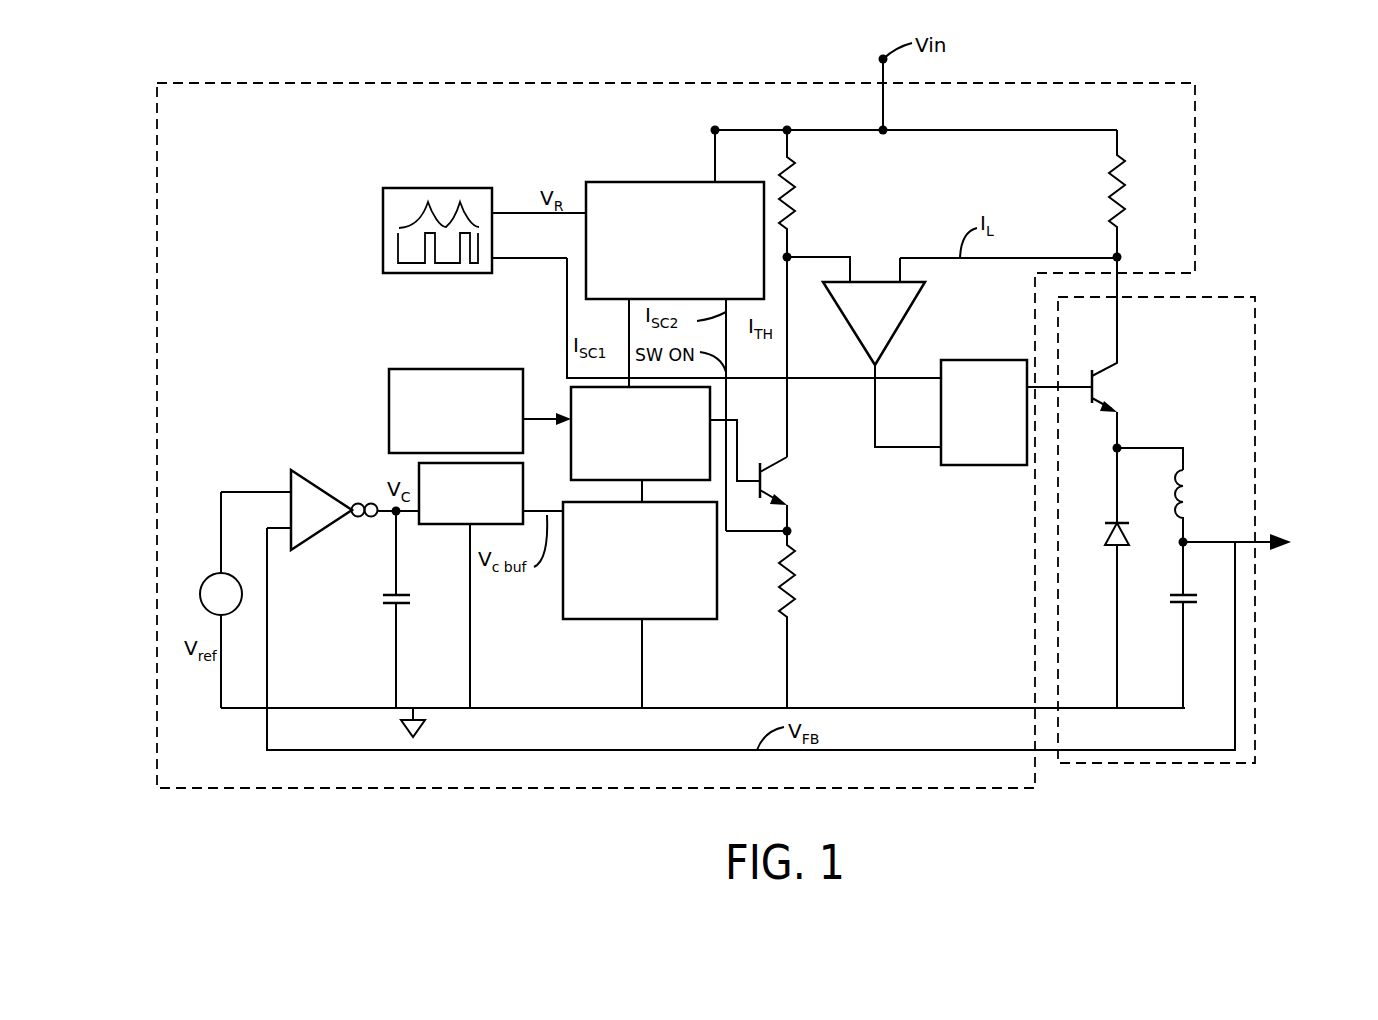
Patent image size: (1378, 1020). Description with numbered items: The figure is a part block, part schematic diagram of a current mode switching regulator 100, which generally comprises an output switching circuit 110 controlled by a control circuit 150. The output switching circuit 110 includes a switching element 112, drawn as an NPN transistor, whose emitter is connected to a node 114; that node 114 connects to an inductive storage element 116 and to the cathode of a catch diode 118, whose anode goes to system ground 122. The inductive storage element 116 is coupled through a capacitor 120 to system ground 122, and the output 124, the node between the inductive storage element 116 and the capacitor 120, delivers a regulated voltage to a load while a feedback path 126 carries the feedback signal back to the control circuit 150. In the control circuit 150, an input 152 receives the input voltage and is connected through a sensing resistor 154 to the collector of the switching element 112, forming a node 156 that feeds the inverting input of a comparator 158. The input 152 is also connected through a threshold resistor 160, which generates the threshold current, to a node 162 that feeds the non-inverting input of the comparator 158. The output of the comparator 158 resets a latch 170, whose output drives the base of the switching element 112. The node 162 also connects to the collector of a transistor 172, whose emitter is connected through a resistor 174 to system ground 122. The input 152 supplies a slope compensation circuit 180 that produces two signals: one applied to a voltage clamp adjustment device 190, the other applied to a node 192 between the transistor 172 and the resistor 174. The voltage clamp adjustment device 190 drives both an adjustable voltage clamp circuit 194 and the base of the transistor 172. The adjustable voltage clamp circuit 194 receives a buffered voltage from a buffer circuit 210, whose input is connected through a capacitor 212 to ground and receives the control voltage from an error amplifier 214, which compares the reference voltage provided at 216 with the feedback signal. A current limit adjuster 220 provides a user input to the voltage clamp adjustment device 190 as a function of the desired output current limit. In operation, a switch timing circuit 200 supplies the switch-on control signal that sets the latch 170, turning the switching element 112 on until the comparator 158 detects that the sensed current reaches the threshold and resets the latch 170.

The switching regulator 100 is at (1262, 165).
The output switching circuit 110 is at (1255, 330).
The switching element 112 is at (1105, 363).
The node 114 is at (1118, 447).
The inductive storage element 116 is at (1185, 479).
The catch diode 118 is at (1110, 545).
The capacitor 120 is at (1175, 605).
The system ground 122 is at (450, 710).
The output 124 is at (1185, 540).
The feedback path 126 is at (1235, 637).
The control circuit 150 is at (157, 203).
The input 152 is at (883, 59).
The sensing resistor 154 is at (1115, 190).
The node 156 is at (1117, 257).
The comparator 158 is at (866, 281).
The threshold resistor 160 is at (797, 181).
The node 162 is at (790, 257).
The latch 170 is at (960, 360).
The transistor 172 is at (760, 468).
The resistor 174 is at (795, 573).
The slope compensation circuit 180 is at (616, 182).
The voltage clamp adjustment device 190 is at (571, 395).
The node 192 is at (789, 529).
The adjustable voltage clamp circuit 194 is at (670, 619).
The switch timing circuit 200 is at (437, 188).
The buffer circuit 210 is at (457, 524).
The capacitor 212 is at (384, 601).
The error amplifier 214 is at (310, 476).
The reference voltage 216 is at (205, 577).
The current limit adjuster 220 is at (420, 369).